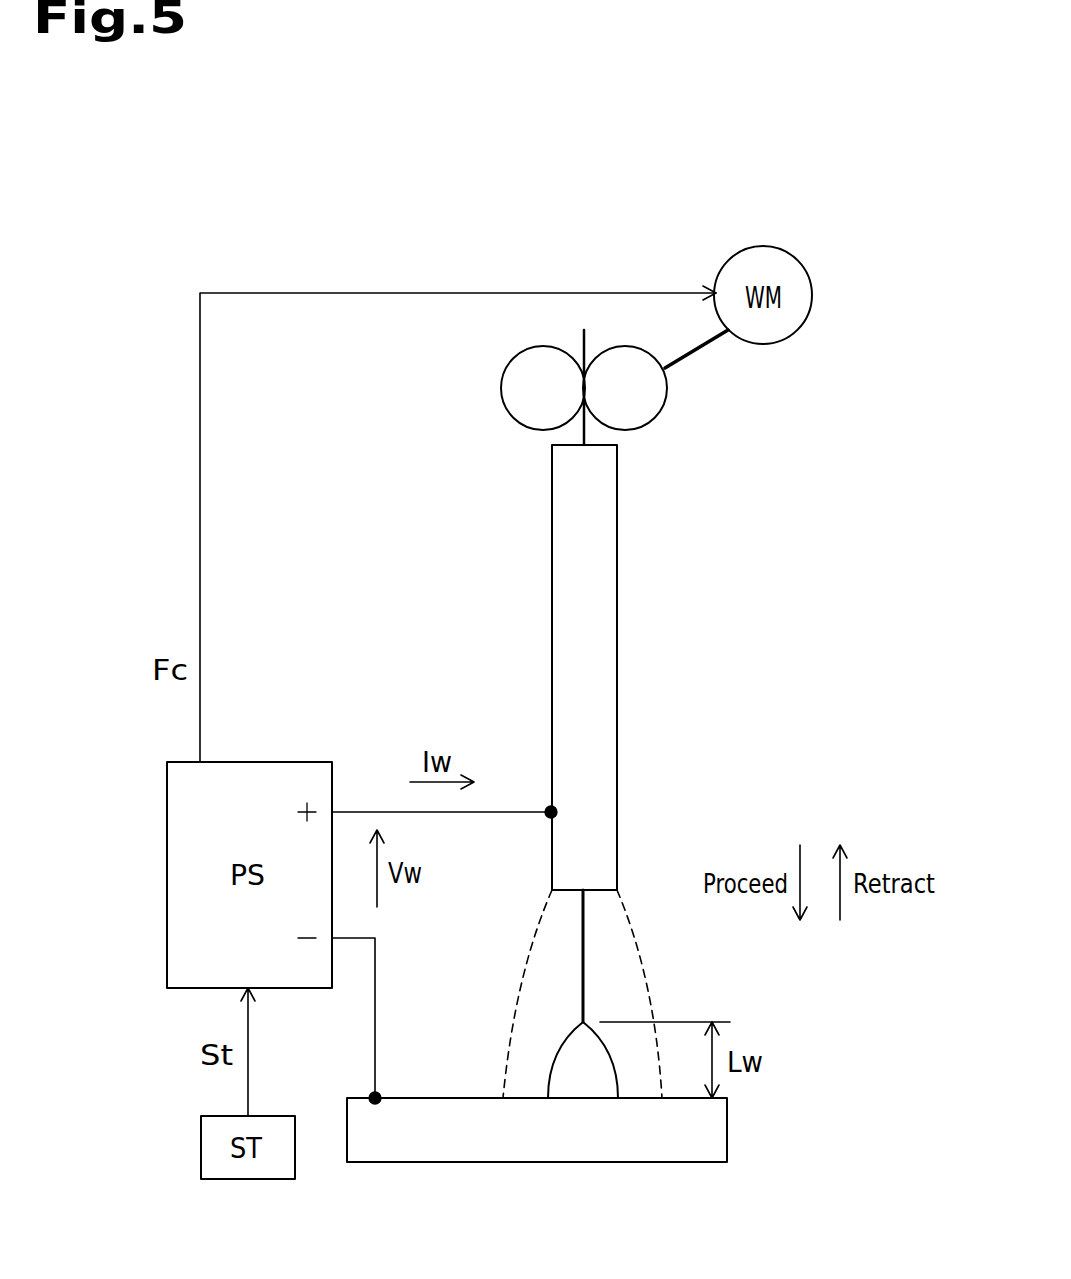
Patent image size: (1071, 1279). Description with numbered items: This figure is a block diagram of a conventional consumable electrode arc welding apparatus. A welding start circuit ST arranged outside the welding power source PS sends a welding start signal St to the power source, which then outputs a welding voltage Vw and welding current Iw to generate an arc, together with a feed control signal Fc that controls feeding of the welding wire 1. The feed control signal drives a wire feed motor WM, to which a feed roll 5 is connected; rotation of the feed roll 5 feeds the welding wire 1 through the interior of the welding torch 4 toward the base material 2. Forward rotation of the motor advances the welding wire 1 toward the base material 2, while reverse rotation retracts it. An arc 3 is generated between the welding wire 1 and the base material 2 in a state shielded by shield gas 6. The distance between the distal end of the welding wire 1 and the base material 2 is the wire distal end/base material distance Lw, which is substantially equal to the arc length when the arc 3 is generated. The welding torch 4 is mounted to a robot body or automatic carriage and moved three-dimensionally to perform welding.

The welding wire 1 is at (583, 925).
The base material 2 is at (503, 1162).
The arc 3 is at (552, 1067).
The welding torch 4 is at (617, 603).
The feed roll 5 is at (655, 418).
The shield gas 6 is at (523, 965).